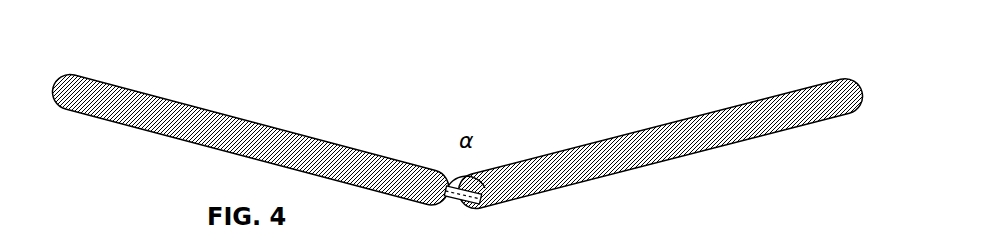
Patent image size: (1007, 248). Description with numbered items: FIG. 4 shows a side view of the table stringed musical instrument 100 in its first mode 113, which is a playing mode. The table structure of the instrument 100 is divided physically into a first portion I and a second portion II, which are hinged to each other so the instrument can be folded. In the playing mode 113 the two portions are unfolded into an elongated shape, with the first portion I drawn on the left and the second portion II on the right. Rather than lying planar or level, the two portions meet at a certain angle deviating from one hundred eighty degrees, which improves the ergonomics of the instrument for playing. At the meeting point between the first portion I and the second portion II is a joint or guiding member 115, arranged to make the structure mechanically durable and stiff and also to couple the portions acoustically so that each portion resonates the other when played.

The table stringed musical instrument 100 is at (328, 77).
The first mode 113 is at (661, 137).
The joint or guiding member 115 is at (450, 187).
The first portion I is at (165, 75).
The second portion II is at (751, 77).